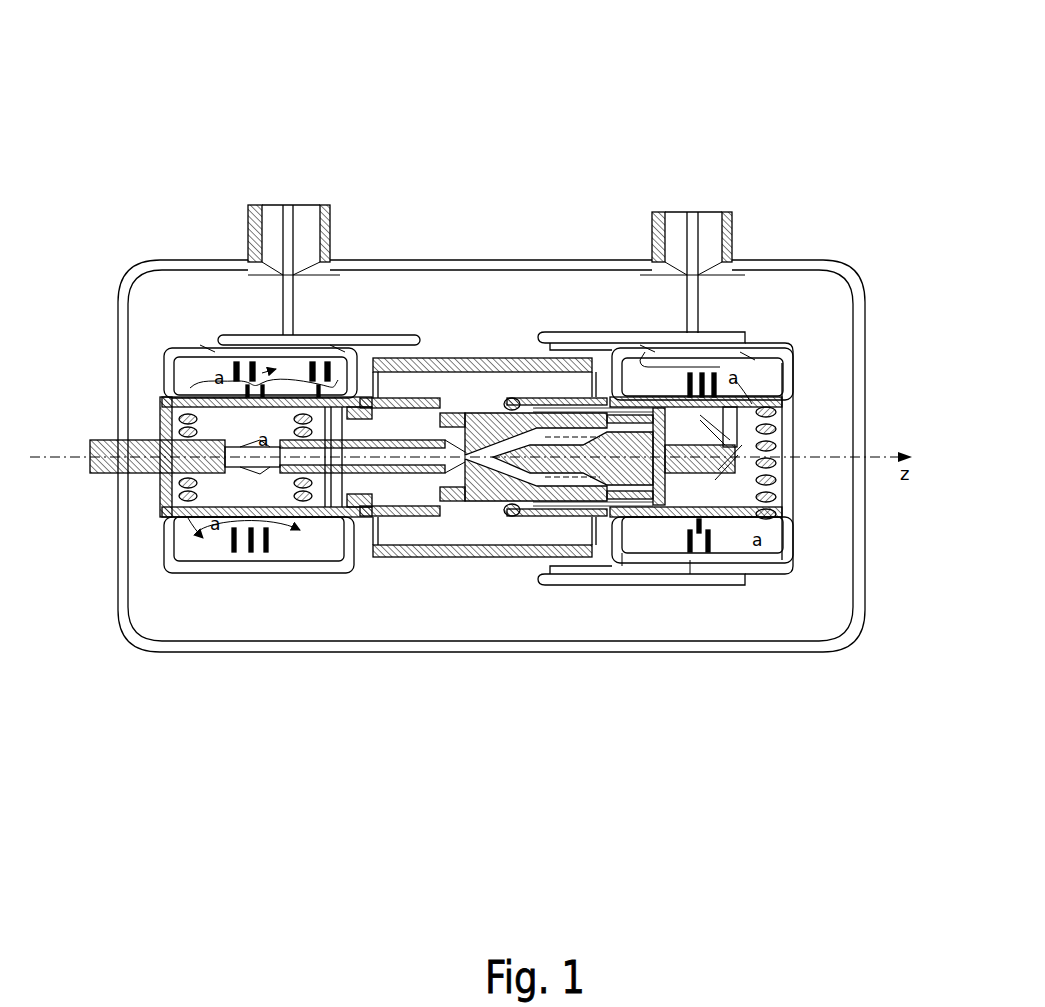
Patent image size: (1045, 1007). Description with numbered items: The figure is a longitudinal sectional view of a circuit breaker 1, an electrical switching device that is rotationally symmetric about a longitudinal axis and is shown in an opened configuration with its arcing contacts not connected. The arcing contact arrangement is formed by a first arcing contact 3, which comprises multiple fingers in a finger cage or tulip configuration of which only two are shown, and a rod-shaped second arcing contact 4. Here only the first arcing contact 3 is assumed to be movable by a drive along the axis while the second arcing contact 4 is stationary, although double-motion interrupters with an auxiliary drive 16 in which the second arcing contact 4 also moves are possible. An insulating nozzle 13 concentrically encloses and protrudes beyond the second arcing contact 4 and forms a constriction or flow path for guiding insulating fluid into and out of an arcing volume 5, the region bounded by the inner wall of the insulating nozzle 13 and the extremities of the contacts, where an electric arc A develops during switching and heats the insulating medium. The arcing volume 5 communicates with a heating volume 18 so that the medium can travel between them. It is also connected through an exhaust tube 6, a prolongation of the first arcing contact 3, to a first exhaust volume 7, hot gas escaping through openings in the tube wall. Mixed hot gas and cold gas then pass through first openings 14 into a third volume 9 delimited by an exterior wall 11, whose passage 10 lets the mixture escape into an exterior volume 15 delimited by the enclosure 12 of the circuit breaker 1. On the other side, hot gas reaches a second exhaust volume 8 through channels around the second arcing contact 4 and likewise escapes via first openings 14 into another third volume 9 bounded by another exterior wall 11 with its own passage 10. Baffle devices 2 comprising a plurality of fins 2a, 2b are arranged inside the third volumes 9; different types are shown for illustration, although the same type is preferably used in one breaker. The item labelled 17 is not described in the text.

The circuit breaker 1 is at (366, 152).
The baffle device 2 is at (479, 458).
The fin 2a is at (330, 375).
The fin 2b is at (213, 345).
The first arcing contact 3 is at (426, 480).
The second arcing contact 4 is at (518, 480).
The arcing volume 5 is at (462, 420).
The exhaust tube 6 is at (324, 545).
The first exhaust volume 7 is at (170, 420).
The second exhaust volume 8 is at (770, 490).
The third volume 9 is at (177, 372).
The passage 10 is at (672, 565).
The exterior wall 11 is at (205, 345).
The enclosure 12 is at (122, 337).
The insulating nozzle 13 is at (528, 425).
The first openings 14 is at (178, 535).
The exterior volume 15 is at (494, 322).
The auxiliary drive 16 is at (737, 413).
The cover plate 17 is at (838, 268).
The heating volume 18 is at (392, 430).
The electric arc A is at (466, 480).